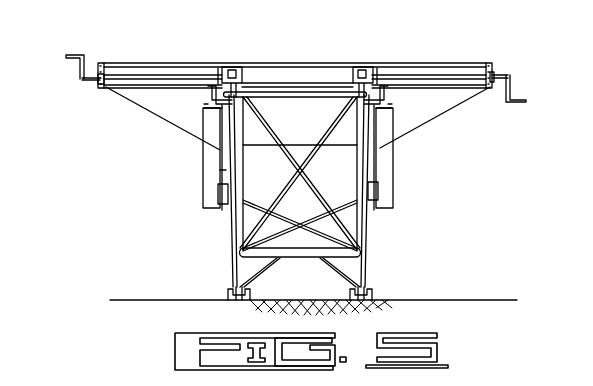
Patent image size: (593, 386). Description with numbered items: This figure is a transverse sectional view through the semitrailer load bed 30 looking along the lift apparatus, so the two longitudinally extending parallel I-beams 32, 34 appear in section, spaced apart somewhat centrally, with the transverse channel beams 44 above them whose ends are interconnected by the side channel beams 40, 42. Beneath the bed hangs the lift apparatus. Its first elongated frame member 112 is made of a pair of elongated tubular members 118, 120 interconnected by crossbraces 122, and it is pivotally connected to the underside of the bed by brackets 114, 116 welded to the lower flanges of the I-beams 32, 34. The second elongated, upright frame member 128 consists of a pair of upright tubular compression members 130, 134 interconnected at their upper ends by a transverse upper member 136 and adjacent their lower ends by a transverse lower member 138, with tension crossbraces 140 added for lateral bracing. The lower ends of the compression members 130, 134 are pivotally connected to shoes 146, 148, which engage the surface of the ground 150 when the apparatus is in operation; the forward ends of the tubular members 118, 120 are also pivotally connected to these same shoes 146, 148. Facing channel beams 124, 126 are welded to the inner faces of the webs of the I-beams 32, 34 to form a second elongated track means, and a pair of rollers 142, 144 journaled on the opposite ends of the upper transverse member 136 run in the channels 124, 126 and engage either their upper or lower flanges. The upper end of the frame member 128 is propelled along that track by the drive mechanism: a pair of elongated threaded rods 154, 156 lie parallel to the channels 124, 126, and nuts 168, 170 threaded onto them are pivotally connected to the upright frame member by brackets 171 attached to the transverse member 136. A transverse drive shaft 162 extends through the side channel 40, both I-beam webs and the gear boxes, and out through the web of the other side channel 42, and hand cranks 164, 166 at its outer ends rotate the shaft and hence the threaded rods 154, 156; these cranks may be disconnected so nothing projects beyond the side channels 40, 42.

The load bed 30 is at (312, 63).
The I-beam 32 is at (205, 137).
The I-beam 34 is at (385, 134).
The side channel beam 40 is at (96, 63).
The side channel beam 42 is at (496, 66).
The transverse channel beam 44 is at (136, 70).
The first elongated frame member 112 is at (227, 240).
The bracket 114 is at (218, 196).
The bracket 116 is at (378, 192).
The elongated tubular member 118 is at (230, 213).
The elongated tubular member 120 is at (370, 214).
The crossbrace 122 is at (314, 232).
The channel beam 124 is at (182, 126).
The channel beam 126 is at (390, 97).
The second elongated upright frame member 128 is at (215, 175).
The upright tubular compression member 130 is at (221, 147).
The upright tubular compression member 134 is at (375, 152).
The transverse upper member 136 is at (272, 97).
The transverse lower member 138 is at (290, 258).
The tension crossbrace 140 is at (292, 184).
The roller 142 is at (208, 96).
The roller 144 is at (388, 116).
The shoe 146 is at (228, 296).
The shoe 148 is at (374, 296).
The ground 150 is at (482, 300).
The threaded rod 154 is at (232, 68).
The threaded rod 156 is at (365, 68).
The transverse drive shaft 162 is at (118, 87).
The hand crank 164 is at (72, 67).
The hand crank 166 is at (512, 83).
The nut 168 is at (233, 70).
The nut 170 is at (362, 70).
The bracket 171 is at (220, 70).